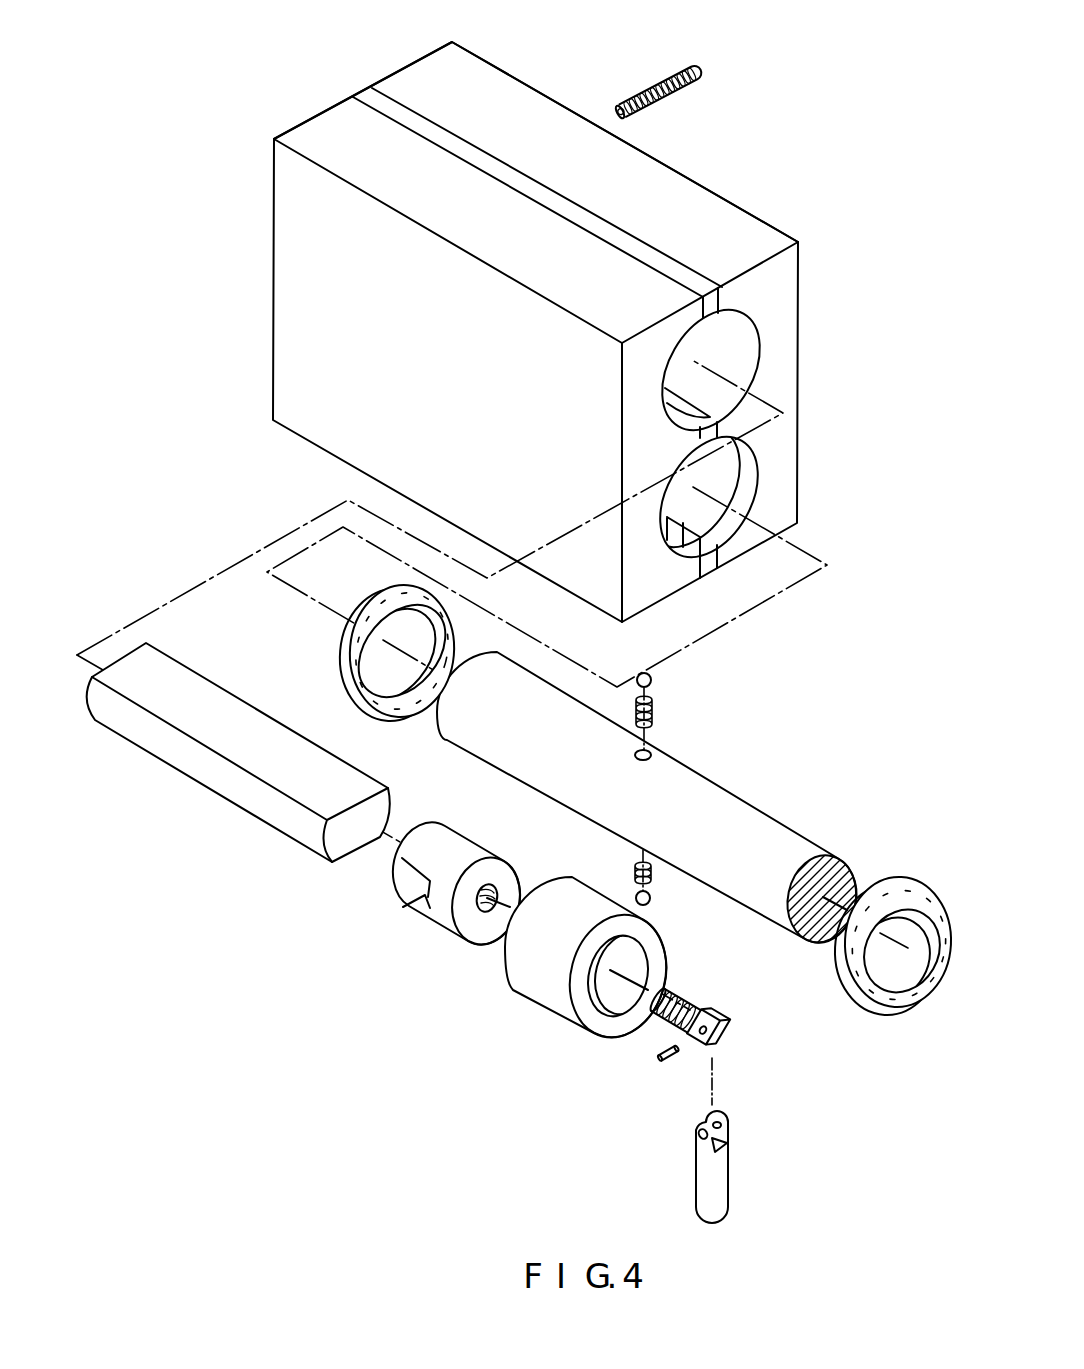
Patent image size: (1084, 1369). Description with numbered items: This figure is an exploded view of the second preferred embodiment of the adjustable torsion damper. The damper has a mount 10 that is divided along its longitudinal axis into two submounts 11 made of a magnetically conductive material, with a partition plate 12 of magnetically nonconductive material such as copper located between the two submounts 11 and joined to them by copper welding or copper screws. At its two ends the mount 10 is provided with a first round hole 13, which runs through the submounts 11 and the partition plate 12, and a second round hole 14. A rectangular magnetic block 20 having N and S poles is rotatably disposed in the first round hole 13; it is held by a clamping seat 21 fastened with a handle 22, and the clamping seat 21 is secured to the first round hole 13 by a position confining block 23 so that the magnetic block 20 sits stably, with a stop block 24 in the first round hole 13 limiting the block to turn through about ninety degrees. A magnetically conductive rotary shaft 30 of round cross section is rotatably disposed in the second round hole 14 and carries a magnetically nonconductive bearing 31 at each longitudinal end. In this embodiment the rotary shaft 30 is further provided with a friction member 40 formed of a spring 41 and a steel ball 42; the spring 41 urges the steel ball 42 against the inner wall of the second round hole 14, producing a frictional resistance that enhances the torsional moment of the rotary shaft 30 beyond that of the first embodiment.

The mount 10 is at (574, 332).
The submounts 11 is at (615, 267).
The partition plate 12 is at (665, 265).
The first round hole 13 is at (747, 340).
The second round hole 14 is at (747, 473).
The magnetic block 20 is at (257, 807).
The clamping seat 21 is at (435, 907).
The handle 22 is at (697, 1178).
The position confining block 23 is at (537, 983).
The stop block 24 is at (642, 92).
The rotary shaft 30 is at (777, 827).
The bearing 31 is at (347, 660).
The friction member 40 is at (713, 809).
The spring 41 is at (656, 720).
The steel ball 42 is at (652, 680).